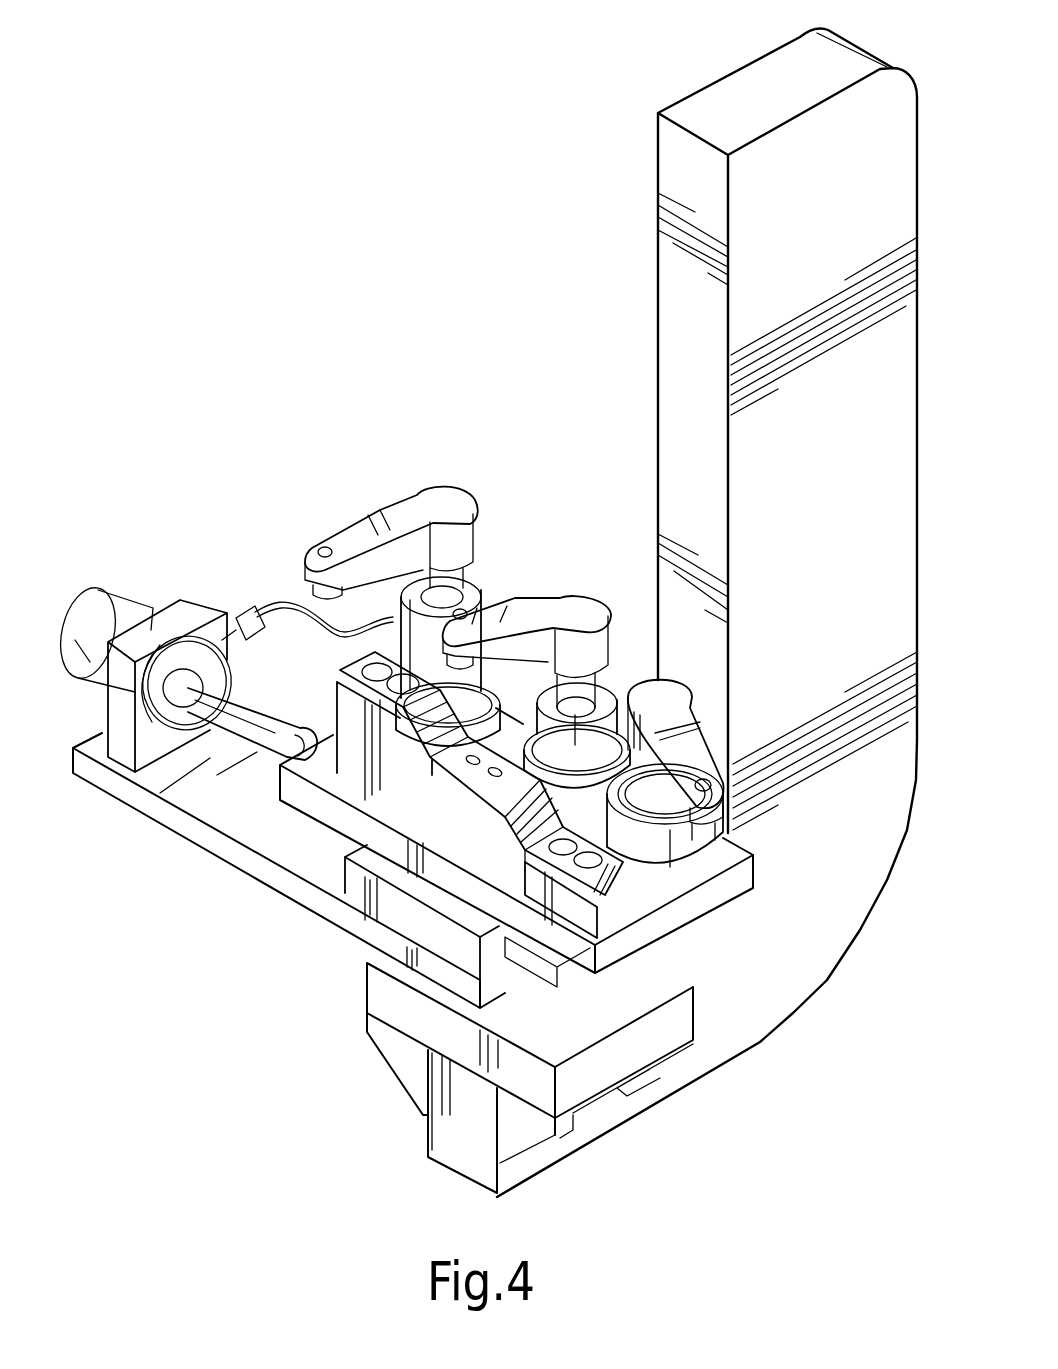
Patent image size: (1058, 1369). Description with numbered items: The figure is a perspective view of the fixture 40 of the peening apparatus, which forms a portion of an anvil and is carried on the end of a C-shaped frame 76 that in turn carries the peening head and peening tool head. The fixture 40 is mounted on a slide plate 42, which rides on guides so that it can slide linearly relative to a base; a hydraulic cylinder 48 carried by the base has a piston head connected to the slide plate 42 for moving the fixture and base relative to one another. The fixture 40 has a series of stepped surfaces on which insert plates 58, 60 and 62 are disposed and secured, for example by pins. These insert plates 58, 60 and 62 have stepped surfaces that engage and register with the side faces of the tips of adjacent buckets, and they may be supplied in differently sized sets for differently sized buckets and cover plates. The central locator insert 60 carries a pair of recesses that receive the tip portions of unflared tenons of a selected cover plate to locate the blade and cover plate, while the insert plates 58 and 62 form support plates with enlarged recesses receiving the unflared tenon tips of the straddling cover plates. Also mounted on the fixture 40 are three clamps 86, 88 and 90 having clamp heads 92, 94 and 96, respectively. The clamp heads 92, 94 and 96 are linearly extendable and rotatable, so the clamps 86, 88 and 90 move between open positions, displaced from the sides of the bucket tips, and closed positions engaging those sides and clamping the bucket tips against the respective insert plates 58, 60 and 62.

The fixture 40 is at (432, 804).
The slide plate 42 is at (177, 823).
The hydraulic cylinder 48 is at (112, 605).
The insert plate 58 is at (333, 674).
The insert plate 60 is at (450, 778).
The insert plate 62 is at (563, 877).
The C-shaped frame 76 is at (677, 327).
The clamp 86 is at (485, 587).
The clamp 88 is at (642, 664).
The clamp 90 is at (690, 850).
The clamp head 92 is at (358, 540).
The clamp head 94 is at (508, 602).
The clamp head 96 is at (697, 765).